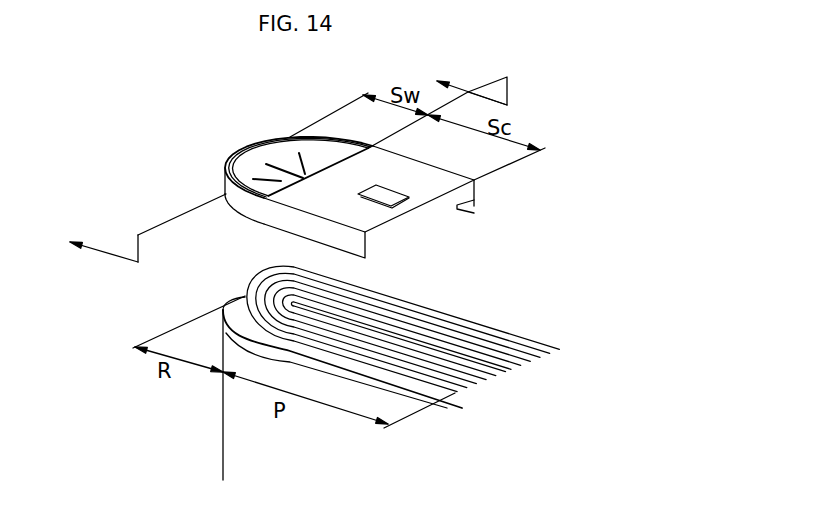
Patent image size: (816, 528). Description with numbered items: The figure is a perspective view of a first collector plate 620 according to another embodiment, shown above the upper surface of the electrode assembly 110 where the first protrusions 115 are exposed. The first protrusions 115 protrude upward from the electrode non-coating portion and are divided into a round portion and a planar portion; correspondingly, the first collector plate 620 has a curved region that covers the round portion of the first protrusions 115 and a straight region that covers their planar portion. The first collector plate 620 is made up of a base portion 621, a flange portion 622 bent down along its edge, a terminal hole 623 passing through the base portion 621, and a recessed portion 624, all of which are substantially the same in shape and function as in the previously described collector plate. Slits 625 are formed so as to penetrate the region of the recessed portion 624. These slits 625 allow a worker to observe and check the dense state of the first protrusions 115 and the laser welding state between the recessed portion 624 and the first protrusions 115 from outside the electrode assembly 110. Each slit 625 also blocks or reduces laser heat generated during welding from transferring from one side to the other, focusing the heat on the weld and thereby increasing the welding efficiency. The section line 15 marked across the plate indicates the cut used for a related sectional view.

The section line 15- 15 is at (275, 160).
The electrode assembly 110 is at (230, 428).
The first protrusions 115 is at (247, 292).
The first collector plate 620 is at (227, 146).
The base portion 621 is at (375, 212).
The flange portion 622 is at (267, 217).
The terminal hole 623 is at (427, 193).
The recessed portion 624 is at (238, 172).
The slits 625 is at (299, 154).